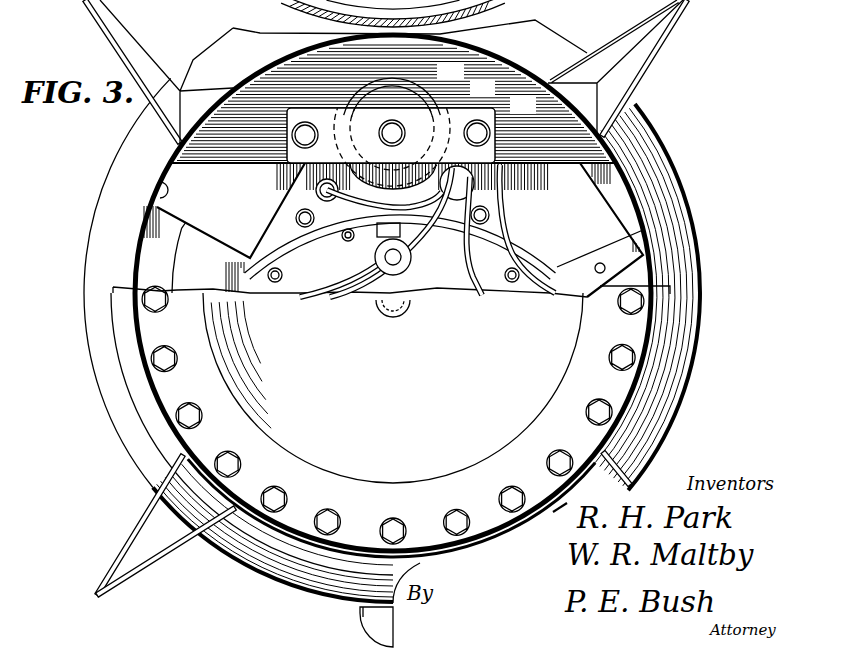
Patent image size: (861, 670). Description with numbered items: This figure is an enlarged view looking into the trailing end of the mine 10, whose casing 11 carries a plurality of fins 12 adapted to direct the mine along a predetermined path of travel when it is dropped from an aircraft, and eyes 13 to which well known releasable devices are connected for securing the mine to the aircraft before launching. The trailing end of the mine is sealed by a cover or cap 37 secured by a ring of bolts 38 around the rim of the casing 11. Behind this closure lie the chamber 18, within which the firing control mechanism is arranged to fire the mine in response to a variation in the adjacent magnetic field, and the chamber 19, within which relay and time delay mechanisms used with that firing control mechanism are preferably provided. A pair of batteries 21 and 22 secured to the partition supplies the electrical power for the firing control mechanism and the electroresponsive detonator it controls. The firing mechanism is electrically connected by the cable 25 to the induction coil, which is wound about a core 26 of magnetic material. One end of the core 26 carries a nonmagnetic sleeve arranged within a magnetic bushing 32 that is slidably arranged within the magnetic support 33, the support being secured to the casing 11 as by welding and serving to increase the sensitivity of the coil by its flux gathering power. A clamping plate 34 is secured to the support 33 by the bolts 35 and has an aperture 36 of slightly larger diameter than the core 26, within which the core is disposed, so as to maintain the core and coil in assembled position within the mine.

The mine 10 is at (82, 316).
The casing 11 is at (697, 233).
The fins 12 is at (100, 30).
The eyes 13 is at (361, 623).
The chamber 18 is at (490, 238).
The chamber 19 is at (452, 282).
The battery 21 is at (612, 197).
The battery 22 is at (163, 238).
The cable 25 is at (340, 256).
The core 26 is at (404, 131).
The magnetic bushing 32 is at (410, 100).
The magnetic support 33 is at (545, 150).
The clamping plate 34 is at (452, 115).
The bolts 35 is at (300, 146).
The aperture 36 is at (377, 135).
The cover or cap 37 is at (615, 385).
The bolts 38 is at (190, 403).